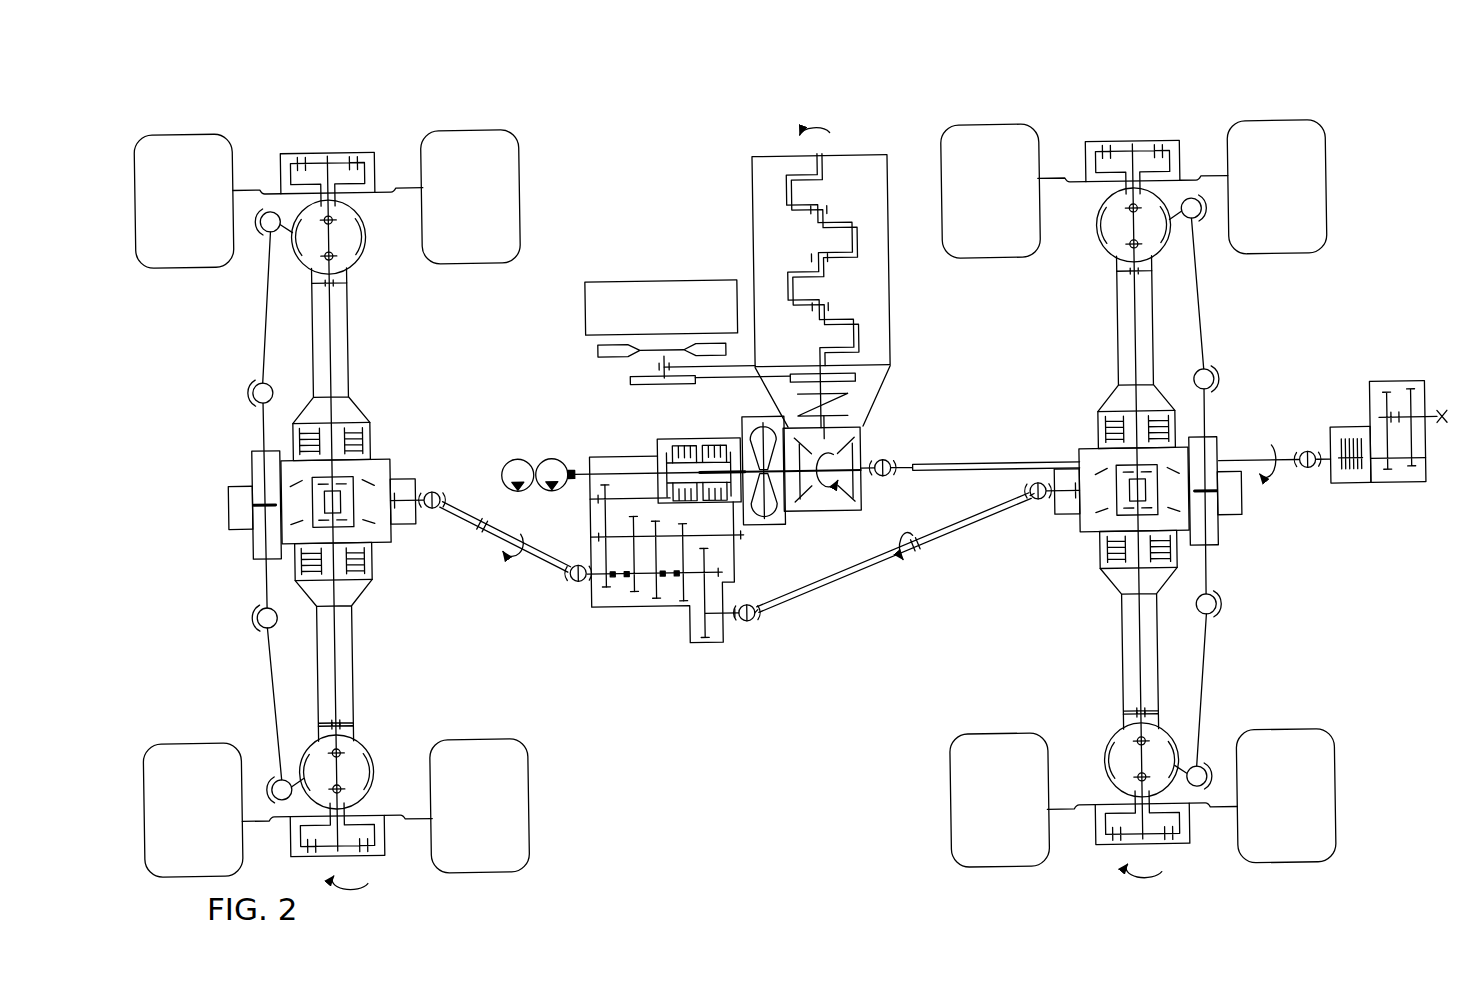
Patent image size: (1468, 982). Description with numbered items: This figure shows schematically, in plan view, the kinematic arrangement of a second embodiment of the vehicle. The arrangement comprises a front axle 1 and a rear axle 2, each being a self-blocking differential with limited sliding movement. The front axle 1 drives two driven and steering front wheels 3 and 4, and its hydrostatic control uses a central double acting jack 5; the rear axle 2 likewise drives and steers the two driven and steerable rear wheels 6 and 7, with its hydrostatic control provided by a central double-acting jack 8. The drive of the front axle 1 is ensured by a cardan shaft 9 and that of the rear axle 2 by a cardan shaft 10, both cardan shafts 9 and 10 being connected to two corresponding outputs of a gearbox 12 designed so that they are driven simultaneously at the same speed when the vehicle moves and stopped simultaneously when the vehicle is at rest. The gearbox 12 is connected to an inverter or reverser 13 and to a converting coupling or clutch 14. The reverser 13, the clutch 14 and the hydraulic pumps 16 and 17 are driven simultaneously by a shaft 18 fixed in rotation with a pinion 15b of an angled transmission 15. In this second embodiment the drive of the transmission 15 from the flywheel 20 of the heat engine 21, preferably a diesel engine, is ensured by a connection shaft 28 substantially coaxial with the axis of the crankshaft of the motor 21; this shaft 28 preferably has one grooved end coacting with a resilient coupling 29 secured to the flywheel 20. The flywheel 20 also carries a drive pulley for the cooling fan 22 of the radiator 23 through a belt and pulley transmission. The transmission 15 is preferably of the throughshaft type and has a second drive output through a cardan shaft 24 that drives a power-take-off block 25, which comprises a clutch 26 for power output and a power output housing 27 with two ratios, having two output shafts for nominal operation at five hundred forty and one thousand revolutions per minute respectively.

The front axle 1 is at (356, 485).
The rear axle 2 is at (1153, 477).
The front wheel 3 is at (462, 123).
The front wheel 4 is at (538, 803).
The central double acting jack 5 is at (240, 455).
The rear wheel 6 is at (1012, 872).
The rear wheel 7 is at (938, 143).
The central double-acting jack 8 is at (1225, 440).
The cardan shaft 9 is at (530, 568).
The cardan shaft 10 is at (965, 538).
The gearbox 12 is at (657, 612).
The inverter 13 is at (698, 430).
The converting coupling or clutch 14 is at (768, 532).
The angled transmission 15 is at (809, 666).
The pinion 15b is at (792, 493).
The hydraulic pump 16 is at (518, 452).
The hydraulic pump 17 is at (553, 452).
The shaft 18 is at (632, 470).
The flywheel 20 is at (865, 377).
The heat engine 21 is at (897, 260).
The cooling fan 22 is at (703, 345).
The radiator 23 is at (717, 270).
The cardan shaft 24 is at (1019, 450).
The power-take-off block 25 is at (1383, 497).
The clutch 26 is at (1350, 487).
The power output housing 27 is at (1412, 492).
The connection shaft 28 is at (845, 421).
The resilient coupling 29 is at (842, 402).